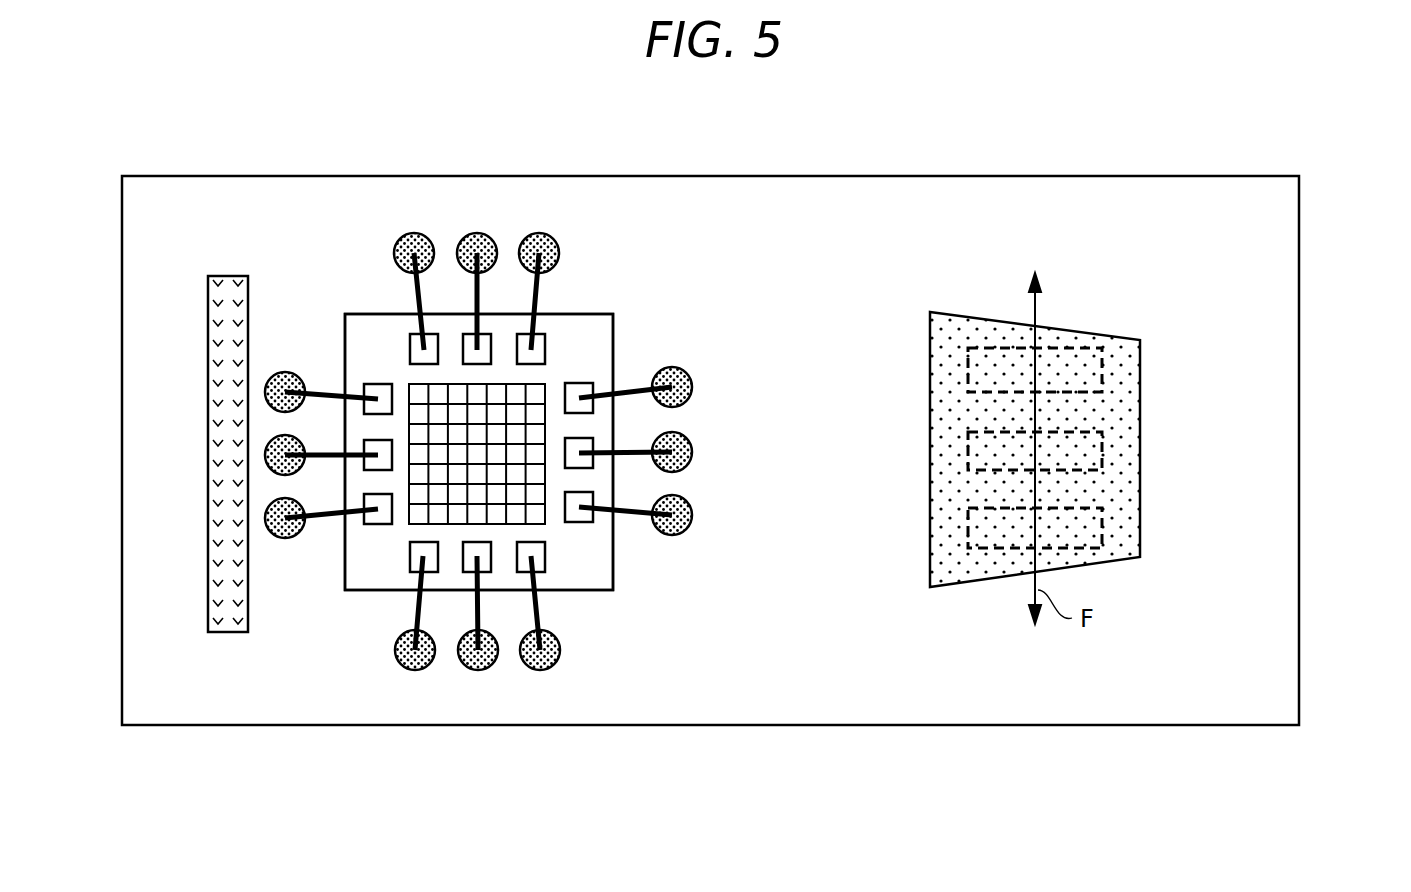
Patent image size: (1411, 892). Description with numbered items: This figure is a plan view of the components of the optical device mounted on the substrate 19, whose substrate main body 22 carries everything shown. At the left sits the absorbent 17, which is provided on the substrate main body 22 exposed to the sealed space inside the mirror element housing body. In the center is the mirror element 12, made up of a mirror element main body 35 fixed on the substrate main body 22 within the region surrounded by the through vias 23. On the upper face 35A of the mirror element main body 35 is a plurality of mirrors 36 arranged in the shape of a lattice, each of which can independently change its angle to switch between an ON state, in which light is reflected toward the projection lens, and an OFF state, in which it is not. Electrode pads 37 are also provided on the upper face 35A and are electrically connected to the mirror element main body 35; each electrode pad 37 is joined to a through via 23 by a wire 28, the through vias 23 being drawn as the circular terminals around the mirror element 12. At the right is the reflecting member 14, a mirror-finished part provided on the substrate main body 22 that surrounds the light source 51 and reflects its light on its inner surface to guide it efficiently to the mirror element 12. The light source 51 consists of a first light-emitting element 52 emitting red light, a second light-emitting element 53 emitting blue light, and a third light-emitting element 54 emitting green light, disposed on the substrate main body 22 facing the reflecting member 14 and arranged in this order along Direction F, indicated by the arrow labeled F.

The mirror element 12 is at (573, 605).
The reflecting member 14 is at (985, 340).
The absorbent 17 is at (212, 377).
The substrate 19 is at (1306, 574).
The substrate main body 22 is at (730, 705).
The through via 23 is at (285, 540).
The wire 28 is at (337, 514).
The mirror element main body 35 is at (583, 325).
The upper face 35A is at (501, 342).
The mirrors 36 is at (457, 415).
The electrode pad 37 is at (378, 524).
The light source 51 is at (847, 785).
The first light-emitting element 52 is at (968, 525).
The second light-emitting element 53 is at (968, 448).
The third light-emitting element 54 is at (967, 368).